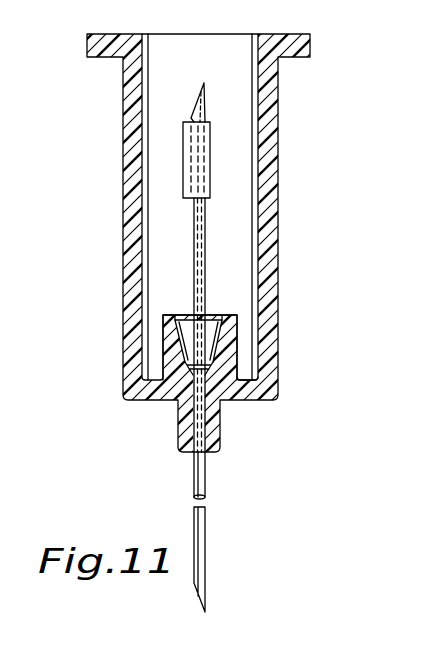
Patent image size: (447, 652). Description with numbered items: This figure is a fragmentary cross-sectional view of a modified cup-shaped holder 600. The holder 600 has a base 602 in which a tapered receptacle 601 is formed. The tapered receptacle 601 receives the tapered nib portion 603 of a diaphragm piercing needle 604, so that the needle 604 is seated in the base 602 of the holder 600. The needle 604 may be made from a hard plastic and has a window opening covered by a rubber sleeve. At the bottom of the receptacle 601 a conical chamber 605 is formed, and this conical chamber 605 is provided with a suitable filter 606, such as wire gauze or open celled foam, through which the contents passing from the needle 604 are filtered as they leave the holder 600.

The cup-shaped holder 600 is at (280, 177).
The tapered receptacle 601 is at (226, 314).
The base 602 is at (252, 372).
The tapered nib portion 603 is at (180, 332).
The diaphragm piercing needle 604 is at (185, 158).
The conical chamber 605 is at (183, 355).
The filter 606 is at (208, 368).